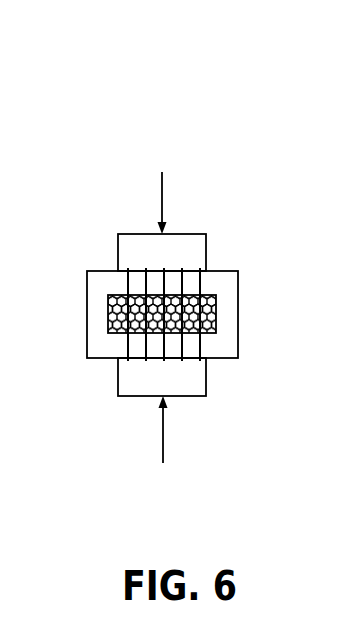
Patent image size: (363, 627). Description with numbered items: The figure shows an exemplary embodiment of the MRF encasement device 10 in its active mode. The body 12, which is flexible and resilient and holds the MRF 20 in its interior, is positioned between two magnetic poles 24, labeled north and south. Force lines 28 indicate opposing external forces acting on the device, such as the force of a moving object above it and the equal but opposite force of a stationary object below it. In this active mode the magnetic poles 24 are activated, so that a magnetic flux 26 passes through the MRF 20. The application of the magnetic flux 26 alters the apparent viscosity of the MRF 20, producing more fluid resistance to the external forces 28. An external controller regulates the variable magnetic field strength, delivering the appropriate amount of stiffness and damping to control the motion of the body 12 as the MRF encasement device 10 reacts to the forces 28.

The MRF encasement device 10 is at (189, 80).
The body 12 is at (238, 271).
The MRF 20 is at (205, 322).
The magnetic poles 24 is at (207, 240).
The magnetic flux 26 is at (128, 285).
The force lines 28 is at (160, 178).